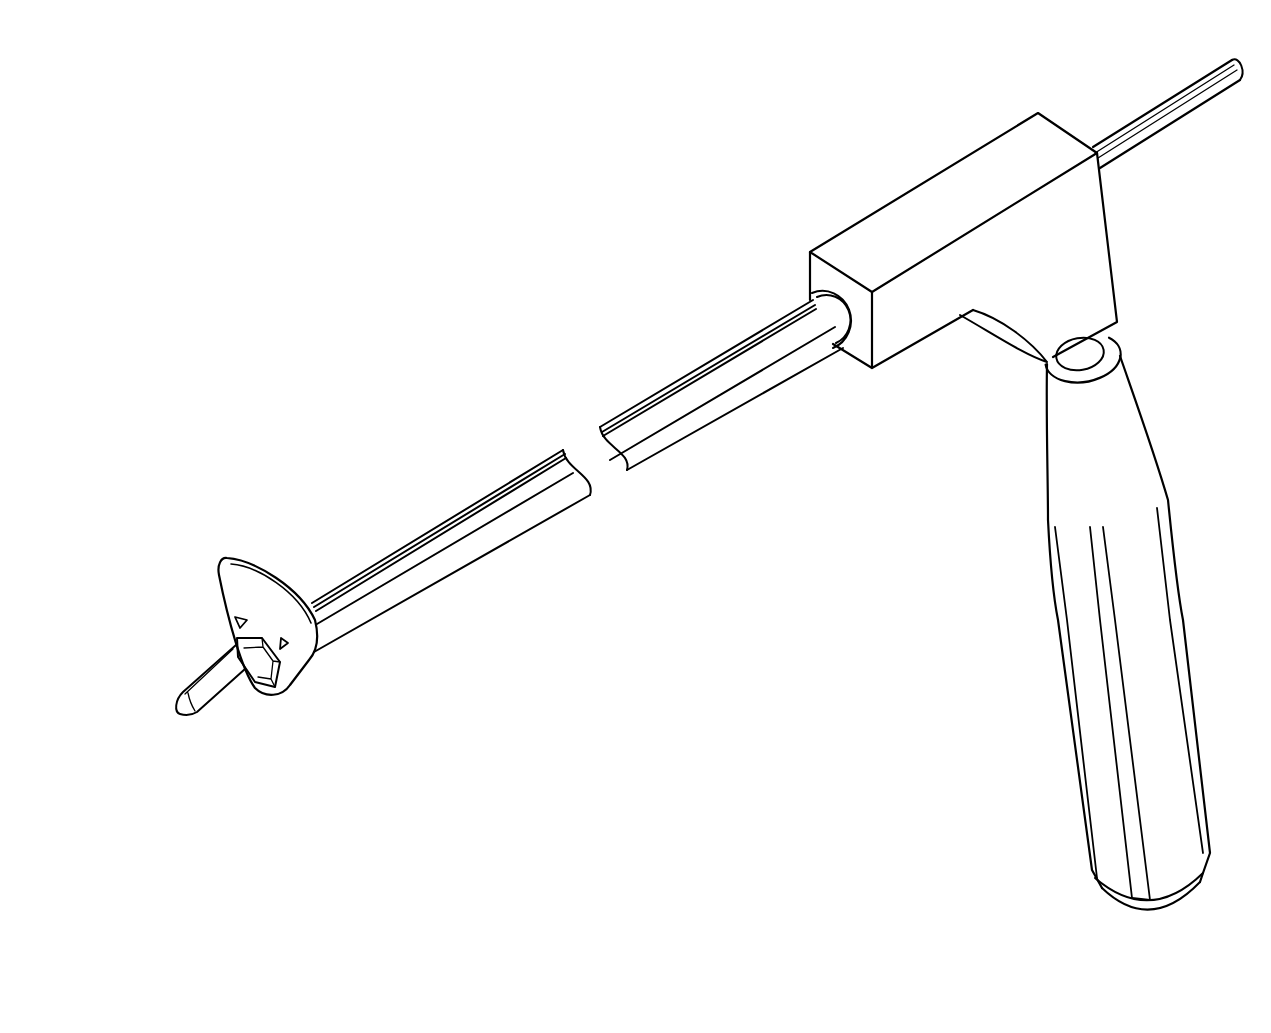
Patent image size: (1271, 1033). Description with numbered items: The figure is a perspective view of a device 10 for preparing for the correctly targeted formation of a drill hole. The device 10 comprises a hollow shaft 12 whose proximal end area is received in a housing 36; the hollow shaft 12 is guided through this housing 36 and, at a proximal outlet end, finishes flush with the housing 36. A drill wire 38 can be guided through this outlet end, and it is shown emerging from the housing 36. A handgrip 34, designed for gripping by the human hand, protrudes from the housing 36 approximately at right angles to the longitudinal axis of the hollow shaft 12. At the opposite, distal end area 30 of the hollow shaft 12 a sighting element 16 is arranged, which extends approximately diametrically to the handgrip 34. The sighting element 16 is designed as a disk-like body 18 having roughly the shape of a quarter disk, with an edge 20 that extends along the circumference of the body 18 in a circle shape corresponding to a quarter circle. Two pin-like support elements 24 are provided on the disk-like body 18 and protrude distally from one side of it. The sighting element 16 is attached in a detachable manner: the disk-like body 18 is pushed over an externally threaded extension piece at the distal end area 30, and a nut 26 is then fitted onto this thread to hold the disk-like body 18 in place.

The device 10 is at (611, 300).
The hollow shaft 12 is at (700, 407).
The sighting element 16 is at (205, 531).
The disk-like body 18 is at (269, 594).
The edge 20 is at (293, 583).
The pin-like support element 24 is at (305, 663).
The nut 26 is at (234, 651).
The distal end area 30 is at (237, 421).
The handgrip 34 is at (1087, 568).
The housing 36 is at (935, 218).
The drill wire 38 is at (213, 693).